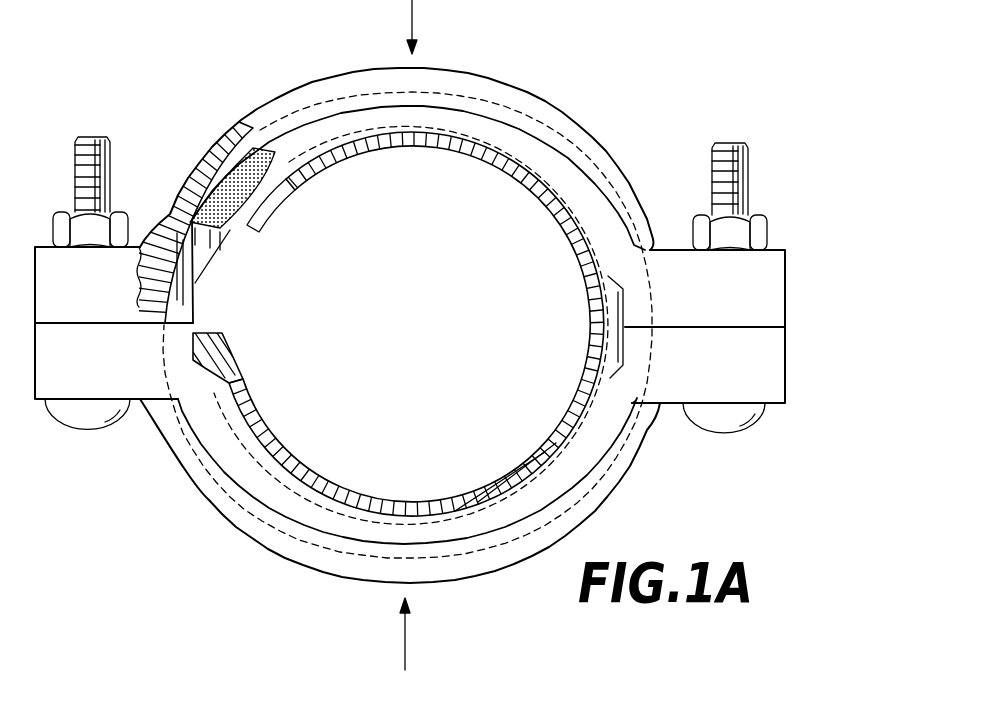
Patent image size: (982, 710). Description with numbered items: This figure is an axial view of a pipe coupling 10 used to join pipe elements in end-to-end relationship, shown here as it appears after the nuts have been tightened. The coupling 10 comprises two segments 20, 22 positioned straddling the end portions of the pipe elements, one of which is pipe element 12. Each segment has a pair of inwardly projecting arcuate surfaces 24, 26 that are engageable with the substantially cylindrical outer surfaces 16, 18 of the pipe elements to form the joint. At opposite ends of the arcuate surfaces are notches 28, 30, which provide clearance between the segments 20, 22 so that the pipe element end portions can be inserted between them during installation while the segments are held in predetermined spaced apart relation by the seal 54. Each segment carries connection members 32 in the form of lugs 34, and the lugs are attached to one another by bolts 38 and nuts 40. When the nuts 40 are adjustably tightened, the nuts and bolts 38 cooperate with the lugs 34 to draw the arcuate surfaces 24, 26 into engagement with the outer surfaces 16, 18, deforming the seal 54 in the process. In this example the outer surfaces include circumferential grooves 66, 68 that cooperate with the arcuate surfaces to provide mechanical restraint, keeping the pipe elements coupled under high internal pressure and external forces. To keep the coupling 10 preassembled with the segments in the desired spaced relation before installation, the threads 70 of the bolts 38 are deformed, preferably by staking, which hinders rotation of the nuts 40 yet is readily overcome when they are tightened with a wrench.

The pipe coupling 10 is at (662, 90).
The pipe element 12 is at (533, 193).
The outer surface 16 is at (337, 147).
The outer surface 18 is at (308, 473).
The segment 20 is at (555, 120).
The segment 22 is at (605, 488).
The arcuate surface 24 is at (468, 140).
The arcuate surface 26 is at (362, 513).
The notch 28 is at (222, 350).
The notch 30 is at (622, 367).
The connection member 32 is at (812, 333).
The lug 34 is at (765, 368).
The bolt 38 is at (718, 187).
The nut 40 is at (763, 232).
The seal 54 is at (208, 155).
The circumferential groove 66 is at (502, 477).
The circumferential groove 68 is at (230, 233).
The threads 70 is at (747, 183).